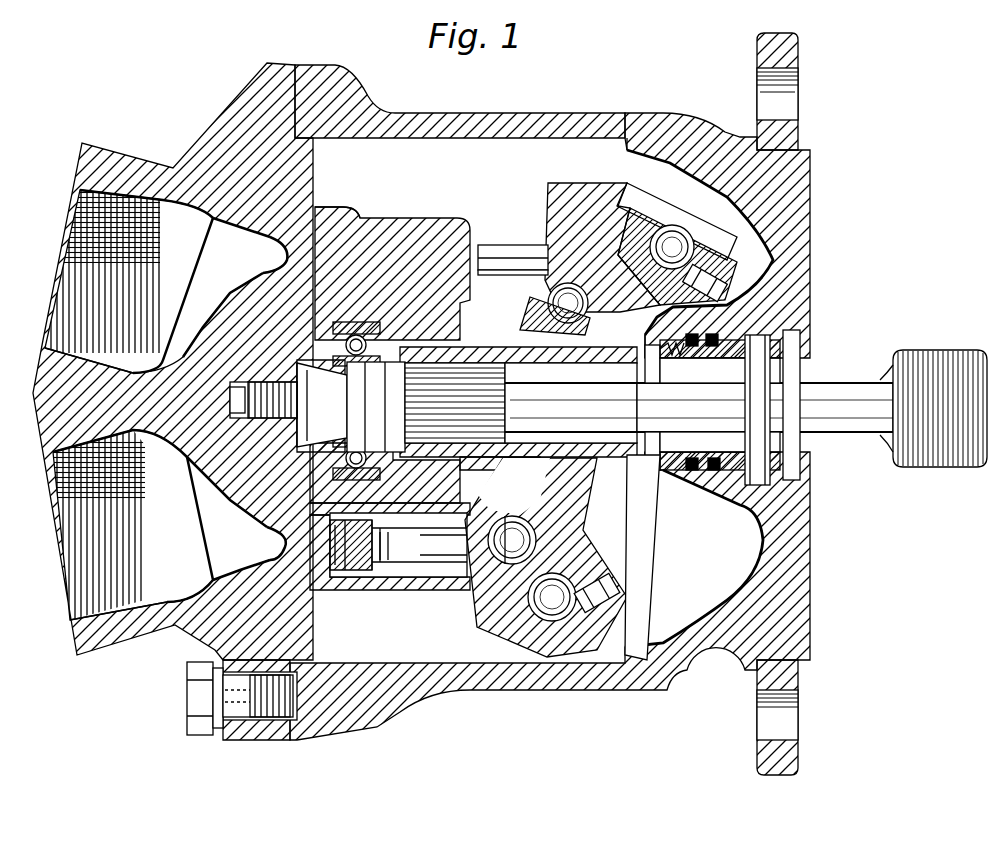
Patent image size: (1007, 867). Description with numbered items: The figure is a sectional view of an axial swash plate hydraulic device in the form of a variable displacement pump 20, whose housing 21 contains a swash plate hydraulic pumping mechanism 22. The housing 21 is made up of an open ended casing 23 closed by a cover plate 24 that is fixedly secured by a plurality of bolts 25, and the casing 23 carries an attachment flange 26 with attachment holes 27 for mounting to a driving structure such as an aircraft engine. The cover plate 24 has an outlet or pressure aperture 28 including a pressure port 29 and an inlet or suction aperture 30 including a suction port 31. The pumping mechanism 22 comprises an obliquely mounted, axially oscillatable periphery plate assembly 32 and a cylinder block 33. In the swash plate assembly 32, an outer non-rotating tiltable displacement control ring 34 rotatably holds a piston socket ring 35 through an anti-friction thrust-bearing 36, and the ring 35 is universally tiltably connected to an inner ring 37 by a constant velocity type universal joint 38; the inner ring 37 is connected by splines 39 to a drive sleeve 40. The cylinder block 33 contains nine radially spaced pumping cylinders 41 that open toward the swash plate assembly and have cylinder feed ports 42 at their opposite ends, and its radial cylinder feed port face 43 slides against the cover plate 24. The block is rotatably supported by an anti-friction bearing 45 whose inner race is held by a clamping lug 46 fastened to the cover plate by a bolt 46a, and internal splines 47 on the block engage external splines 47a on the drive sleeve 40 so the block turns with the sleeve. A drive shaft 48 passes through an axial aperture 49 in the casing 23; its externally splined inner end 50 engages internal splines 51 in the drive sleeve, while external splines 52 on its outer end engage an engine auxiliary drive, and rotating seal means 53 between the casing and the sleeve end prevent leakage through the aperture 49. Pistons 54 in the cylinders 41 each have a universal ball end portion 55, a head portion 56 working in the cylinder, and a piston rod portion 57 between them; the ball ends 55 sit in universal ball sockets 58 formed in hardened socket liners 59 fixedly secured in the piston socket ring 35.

The variable displacement pump 20 is at (536, 92).
The housing 21 is at (460, 113).
The swash plate hydraulic pumping mechanism 22 is at (502, 235).
The casing 23 is at (812, 162).
The cover plate 24 is at (245, 92).
The bolts 25 is at (255, 705).
The attachment flange 26 is at (760, 46).
The attachment holes 27 is at (798, 78).
The outlet or pressure aperture 28 is at (80, 536).
The outlet or pressure port 29 is at (268, 532).
The inlet or suction aperture 30 is at (75, 205).
The inlet or suction port 31 is at (255, 233).
The periphery plate assembly 32 is at (680, 180).
The cylinder block 33 is at (392, 214).
The displacement control ring 34 is at (660, 200).
The piston socket ring 35 is at (608, 232).
The anti-friction thrust-bearing 36 is at (725, 280).
The inner ring 37 is at (533, 312).
The universal joint 38 is at (566, 282).
The splines 39 is at (600, 352).
The drive sleeve 40 is at (568, 352).
The pumping cylinders 41 is at (248, 576).
The cylinder feed ports 42 is at (278, 550).
The radial cylinder feed port face 43 is at (345, 206).
The anti-friction bearing 45 is at (278, 260).
The clamping lug 46 is at (248, 286).
The bolt 46a is at (290, 395).
The internal splines 47 is at (395, 330).
The external splines 47a is at (385, 350).
The drive shaft 48 is at (852, 379).
The axial aperture 49 is at (805, 340).
The externally splined inner end 50 is at (699, 403).
The internal splines 51 is at (490, 388).
The external splines 52 is at (940, 352).
The rotating seal means 53 is at (790, 320).
The pistons 54 is at (478, 270).
The universal ball end portion 55 is at (500, 520).
The head portion 56 is at (360, 575).
The piston rod portion 57 is at (500, 268).
The universal ball sockets 58 is at (542, 559).
The hardened socket liners 59 is at (545, 528).